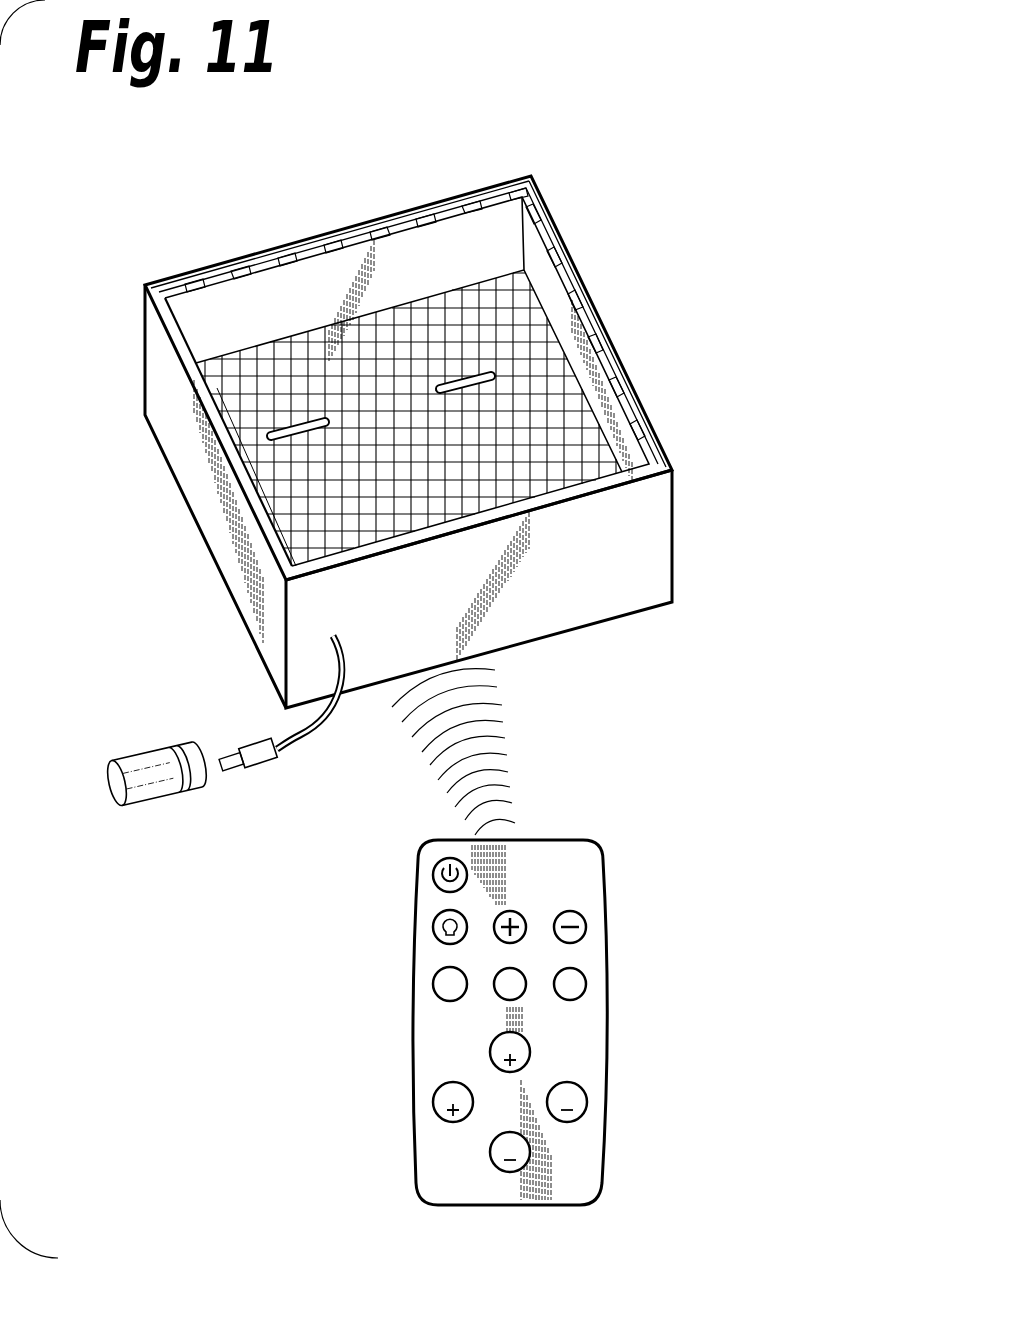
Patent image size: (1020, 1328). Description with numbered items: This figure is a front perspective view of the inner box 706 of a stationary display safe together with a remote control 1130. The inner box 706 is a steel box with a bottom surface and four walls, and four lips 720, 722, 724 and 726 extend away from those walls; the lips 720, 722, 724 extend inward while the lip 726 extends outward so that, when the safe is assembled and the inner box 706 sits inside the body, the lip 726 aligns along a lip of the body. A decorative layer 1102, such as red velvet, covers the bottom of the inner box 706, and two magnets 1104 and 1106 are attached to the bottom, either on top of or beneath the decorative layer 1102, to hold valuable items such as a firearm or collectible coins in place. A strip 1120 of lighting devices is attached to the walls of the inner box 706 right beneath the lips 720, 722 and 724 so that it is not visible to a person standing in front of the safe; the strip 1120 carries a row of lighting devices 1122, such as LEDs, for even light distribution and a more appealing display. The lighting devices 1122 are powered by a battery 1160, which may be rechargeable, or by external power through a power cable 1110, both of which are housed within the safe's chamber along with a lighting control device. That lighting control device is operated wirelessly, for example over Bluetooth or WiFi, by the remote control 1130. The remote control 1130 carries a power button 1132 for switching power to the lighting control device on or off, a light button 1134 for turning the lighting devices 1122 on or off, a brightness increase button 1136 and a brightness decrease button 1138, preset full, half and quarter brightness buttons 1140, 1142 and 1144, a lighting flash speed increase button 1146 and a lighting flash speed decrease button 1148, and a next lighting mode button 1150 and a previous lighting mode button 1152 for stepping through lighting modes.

The inner box 706 is at (655, 557).
The lip 720 is at (230, 463).
The lip 722 is at (451, 210).
The lip 724 is at (582, 497).
The lip 726 is at (632, 400).
The decorative layer 1102 is at (540, 342).
The magnet 1104 is at (290, 428).
The magnet 1106 is at (487, 373).
The power cable 1110 is at (284, 757).
The strip of lighting devices 1120 is at (277, 257).
The lighting devices 1122 is at (243, 267).
The remote control 1130 is at (600, 850).
The power button 1132 is at (432, 883).
The light button 1134 is at (434, 937).
The brightness increase button 1136 is at (520, 915).
The brightness decrease button 1138 is at (587, 928).
The 100% brightness button 1140 is at (434, 992).
The 50% brightness button 1142 is at (527, 995).
The 25% brightness button 1144 is at (587, 980).
The lighting flash speed increase button 1146 is at (433, 1102).
The lighting flash speed decrease button 1148 is at (587, 1105).
The next lighting mode button 1150 is at (530, 1050).
The previous lighting mode button 1152 is at (530, 1160).
The battery 1160 is at (145, 805).